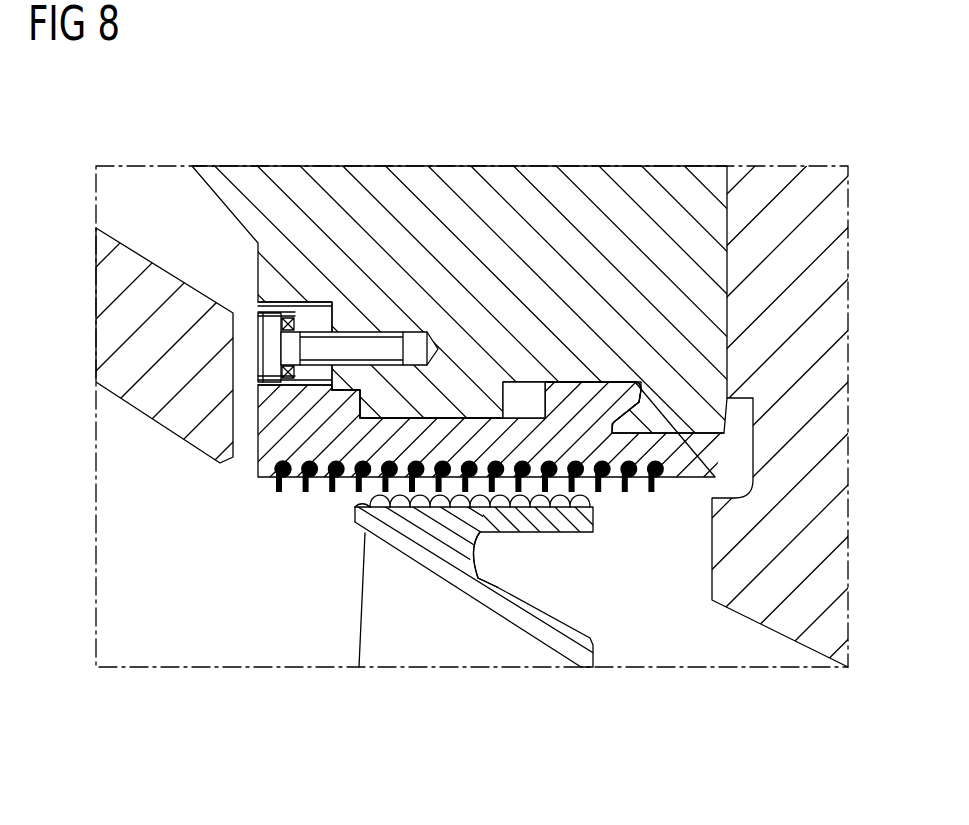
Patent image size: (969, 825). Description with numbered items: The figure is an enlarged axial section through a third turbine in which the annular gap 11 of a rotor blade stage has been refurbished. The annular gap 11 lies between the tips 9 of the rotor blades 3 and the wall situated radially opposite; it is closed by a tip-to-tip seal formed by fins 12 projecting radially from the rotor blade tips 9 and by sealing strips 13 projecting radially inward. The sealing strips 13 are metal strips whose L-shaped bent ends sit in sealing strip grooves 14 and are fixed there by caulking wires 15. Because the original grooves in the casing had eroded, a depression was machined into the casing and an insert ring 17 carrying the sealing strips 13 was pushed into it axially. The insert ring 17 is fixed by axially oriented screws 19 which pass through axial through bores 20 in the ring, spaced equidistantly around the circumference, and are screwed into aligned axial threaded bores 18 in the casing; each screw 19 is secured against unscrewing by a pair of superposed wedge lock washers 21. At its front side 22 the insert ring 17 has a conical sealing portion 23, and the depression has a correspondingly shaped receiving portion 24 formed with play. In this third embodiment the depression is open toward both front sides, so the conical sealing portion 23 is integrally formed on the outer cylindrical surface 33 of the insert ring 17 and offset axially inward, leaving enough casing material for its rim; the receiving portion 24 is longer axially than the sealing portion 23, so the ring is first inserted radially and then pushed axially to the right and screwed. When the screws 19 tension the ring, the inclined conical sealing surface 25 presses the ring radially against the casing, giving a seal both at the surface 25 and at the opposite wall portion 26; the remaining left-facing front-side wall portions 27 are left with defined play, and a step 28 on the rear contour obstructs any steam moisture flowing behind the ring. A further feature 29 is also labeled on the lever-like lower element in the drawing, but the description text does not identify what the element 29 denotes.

The rotor blade 3 is at (390, 658).
The rotor blade tip 9 is at (412, 543).
The annular gap 11 is at (541, 533).
The fin 12 is at (363, 532).
The sealing strip 13 is at (277, 478).
The sealing strip groove 14 is at (272, 463).
The caulking wire 15 is at (280, 470).
The insert ring 17 is at (472, 405).
The threaded bore 18 is at (388, 305).
The screw 19 is at (365, 343).
The through bore 20 is at (268, 381).
The wedge lock washer 21 is at (279, 300).
The front side 22 is at (626, 408).
The conical sealing portion 23 is at (617, 385).
The receiving portion 24 is at (577, 380).
The conical sealing surface 25 is at (616, 433).
The wall portion 26 is at (622, 386).
The front-side wall portion 27 is at (350, 300).
The step 28 is at (343, 393).
The curved surface 29 is at (497, 593).
The outer cylindrical surface 33 is at (533, 395).